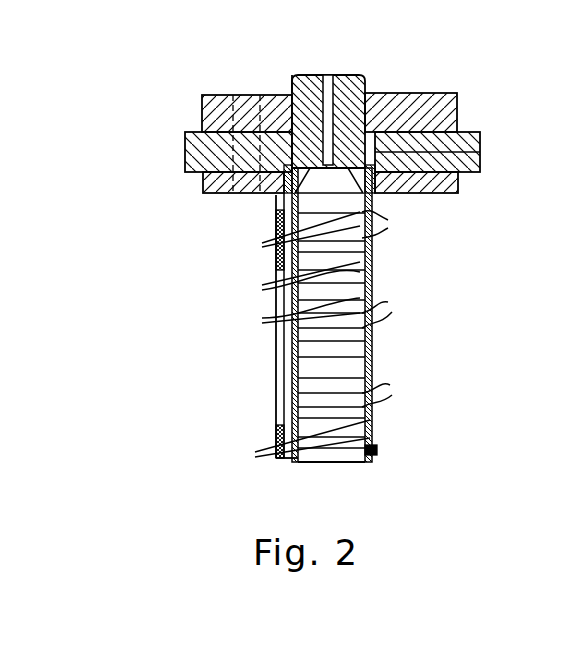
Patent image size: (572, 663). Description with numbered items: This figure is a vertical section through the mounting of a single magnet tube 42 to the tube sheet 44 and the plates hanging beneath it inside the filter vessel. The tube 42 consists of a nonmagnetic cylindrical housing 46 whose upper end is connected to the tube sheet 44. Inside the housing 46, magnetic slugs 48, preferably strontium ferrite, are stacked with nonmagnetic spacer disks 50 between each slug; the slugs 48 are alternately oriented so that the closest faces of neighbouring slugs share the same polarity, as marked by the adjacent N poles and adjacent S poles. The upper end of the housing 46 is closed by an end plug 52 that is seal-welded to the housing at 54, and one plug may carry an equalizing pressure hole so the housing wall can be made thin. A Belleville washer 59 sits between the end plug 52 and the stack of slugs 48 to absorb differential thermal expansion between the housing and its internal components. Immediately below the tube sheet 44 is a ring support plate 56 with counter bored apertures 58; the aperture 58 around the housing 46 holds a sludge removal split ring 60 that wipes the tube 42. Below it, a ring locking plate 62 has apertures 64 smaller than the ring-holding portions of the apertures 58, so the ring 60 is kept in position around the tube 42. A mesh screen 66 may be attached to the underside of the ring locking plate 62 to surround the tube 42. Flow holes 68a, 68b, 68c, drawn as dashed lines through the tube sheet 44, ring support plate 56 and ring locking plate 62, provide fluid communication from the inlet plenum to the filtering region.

The magnet tube 42 is at (382, 282).
The tube sheet 44 is at (223, 93).
The nonmagnetic cylindrical housing 46 is at (373, 343).
The magnetic slugs 48 is at (378, 450).
The nonmagnetic spacer disks 50 is at (375, 418).
The end plug 52 is at (345, 83).
The seal weld 54 is at (290, 88).
The ring support plate 56 is at (468, 135).
The counter bored apertures 58 is at (420, 118).
The Belleville washer 59 is at (271, 195).
The sludge removal split ring 60 is at (440, 150).
The ring locking plate 62 is at (458, 187).
The apertures 64 is at (370, 193).
The mesh screen 66 is at (276, 422).
The flow hole 68a is at (243, 117).
The flow hole 68b is at (242, 150).
The flow hole 68c is at (242, 185).